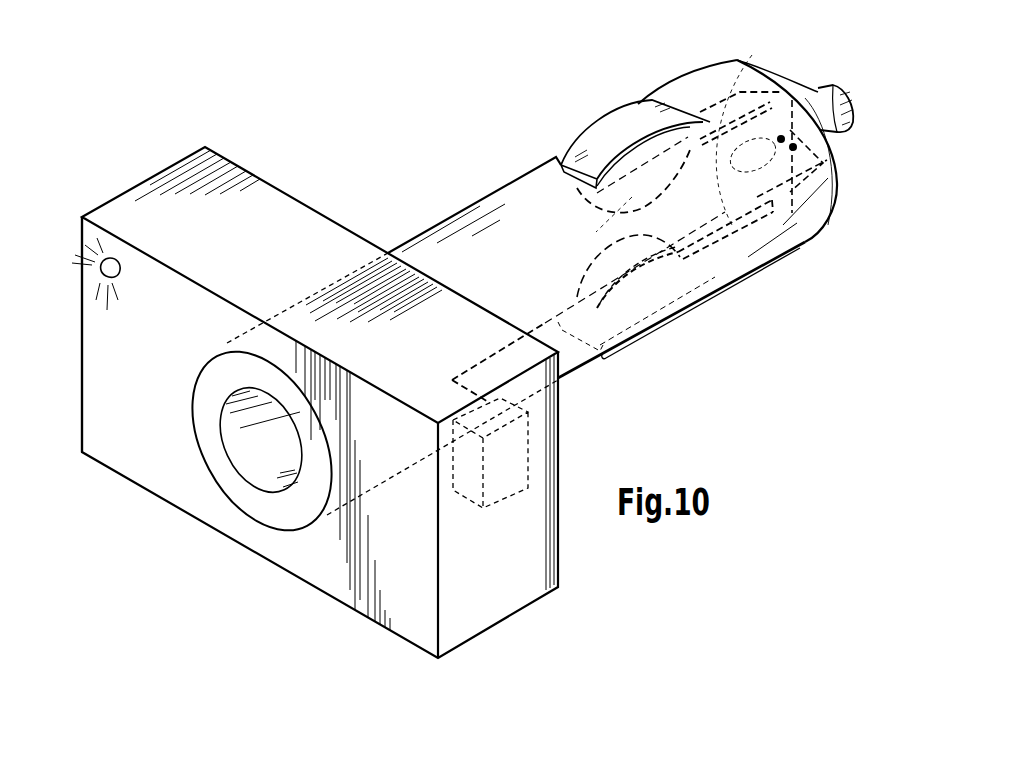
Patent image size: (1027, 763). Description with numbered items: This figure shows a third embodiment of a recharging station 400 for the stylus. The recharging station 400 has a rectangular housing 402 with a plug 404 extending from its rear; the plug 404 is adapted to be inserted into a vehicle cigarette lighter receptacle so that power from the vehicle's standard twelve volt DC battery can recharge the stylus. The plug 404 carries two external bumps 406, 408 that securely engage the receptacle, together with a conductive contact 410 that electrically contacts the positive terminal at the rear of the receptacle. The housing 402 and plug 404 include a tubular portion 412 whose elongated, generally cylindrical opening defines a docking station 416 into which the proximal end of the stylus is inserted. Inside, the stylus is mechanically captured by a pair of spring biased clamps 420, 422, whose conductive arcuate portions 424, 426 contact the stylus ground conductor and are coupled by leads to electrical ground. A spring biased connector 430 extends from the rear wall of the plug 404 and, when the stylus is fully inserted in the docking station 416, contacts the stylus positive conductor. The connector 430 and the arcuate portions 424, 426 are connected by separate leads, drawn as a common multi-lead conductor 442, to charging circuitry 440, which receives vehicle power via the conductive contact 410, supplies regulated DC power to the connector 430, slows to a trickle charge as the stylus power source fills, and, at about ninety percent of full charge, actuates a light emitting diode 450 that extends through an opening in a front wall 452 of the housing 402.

The recharging station 400 is at (414, 138).
The housing 402 is at (230, 200).
The plug 404 is at (537, 185).
The external bump 406 is at (638, 118).
The external bump 408 is at (648, 340).
The conductive contact 410 is at (848, 100).
The tubular portion 412 is at (266, 508).
The docking station 416 is at (258, 433).
The spring biased clamp 420 is at (770, 258).
The spring biased clamp 422 is at (733, 107).
The conductive arcuate portion 424 is at (583, 270).
The conductive arcuate portion 426 is at (680, 180).
The spring biased connector 430 is at (827, 197).
The charging circuitry 440 is at (518, 455).
The common multi-lead conductor 442 is at (570, 337).
The light emitting diode 450 is at (106, 268).
The front wall 452 is at (118, 413).